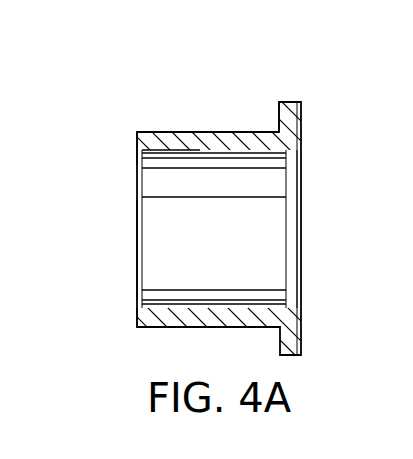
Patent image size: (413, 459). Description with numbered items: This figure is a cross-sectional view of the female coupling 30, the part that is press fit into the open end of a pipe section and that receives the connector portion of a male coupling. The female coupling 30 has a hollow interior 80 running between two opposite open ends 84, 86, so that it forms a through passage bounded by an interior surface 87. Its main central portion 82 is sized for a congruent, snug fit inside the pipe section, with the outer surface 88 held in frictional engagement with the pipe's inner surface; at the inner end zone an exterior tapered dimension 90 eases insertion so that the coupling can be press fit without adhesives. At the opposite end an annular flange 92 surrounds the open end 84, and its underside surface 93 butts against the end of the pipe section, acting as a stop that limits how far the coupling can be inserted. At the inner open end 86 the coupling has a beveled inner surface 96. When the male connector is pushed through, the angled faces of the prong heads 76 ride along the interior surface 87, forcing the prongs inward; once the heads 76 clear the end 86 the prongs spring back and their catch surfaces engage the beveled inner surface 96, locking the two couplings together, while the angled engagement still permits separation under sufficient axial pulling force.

The female coupling 30 is at (182, 130).
The heads of the prongs 76 is at (138, 310).
The hollow interior 80 is at (202, 244).
The main central portion 82 is at (227, 130).
The open end 84 is at (291, 224).
The open end 86 is at (137, 247).
The interior surface 87 is at (196, 151).
The outer surface 88 is at (208, 130).
The exterior tapered dimension 90 is at (146, 131).
The annular flange 92 is at (303, 108).
The underside surface 93 is at (280, 128).
The beveled inner surface 96 is at (138, 157).